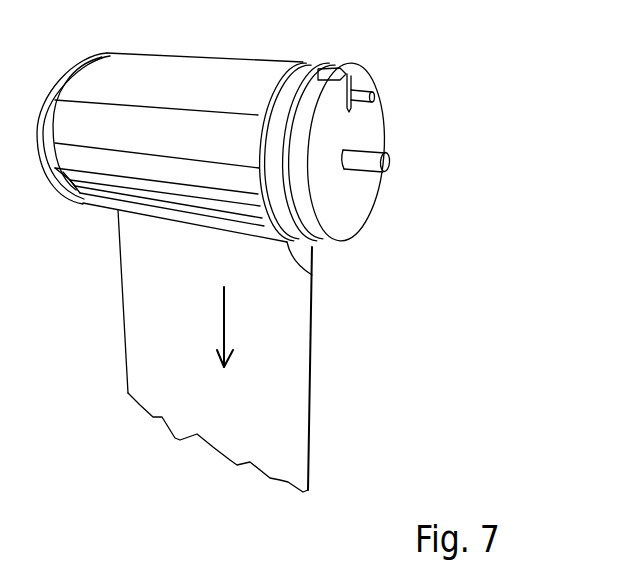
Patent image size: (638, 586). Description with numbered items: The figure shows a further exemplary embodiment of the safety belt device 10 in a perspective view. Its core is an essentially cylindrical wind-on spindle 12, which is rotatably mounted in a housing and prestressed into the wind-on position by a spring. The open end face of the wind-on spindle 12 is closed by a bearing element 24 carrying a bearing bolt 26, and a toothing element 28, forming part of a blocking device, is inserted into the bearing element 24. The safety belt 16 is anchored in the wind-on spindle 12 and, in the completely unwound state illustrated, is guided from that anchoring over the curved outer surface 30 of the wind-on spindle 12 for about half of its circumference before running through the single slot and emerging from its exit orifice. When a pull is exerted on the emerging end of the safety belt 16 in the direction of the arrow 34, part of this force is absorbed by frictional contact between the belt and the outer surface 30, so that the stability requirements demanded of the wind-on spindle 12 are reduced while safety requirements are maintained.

The safety belt device 10 is at (388, 57).
The wind-on spindle 12 is at (312, 275).
The safety belt 16 is at (182, 74).
The bearing element 24 is at (355, 205).
The bearing bolt 26 is at (378, 152).
The toothing element 28 is at (340, 67).
The curved outer surface 30 is at (300, 80).
The arrow 34 is at (226, 317).